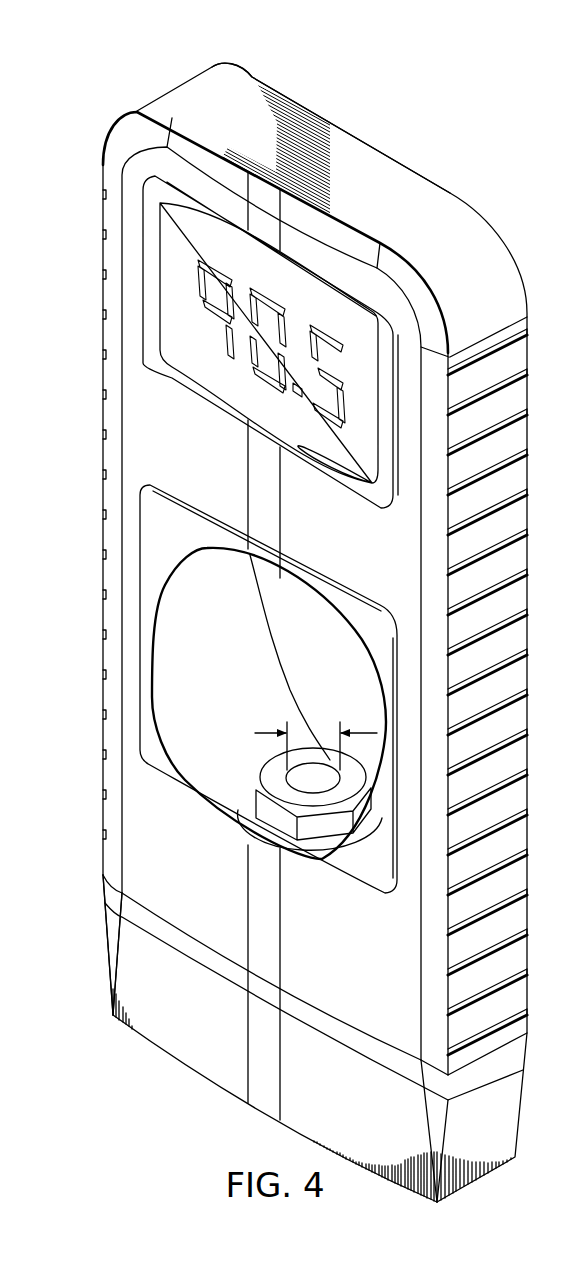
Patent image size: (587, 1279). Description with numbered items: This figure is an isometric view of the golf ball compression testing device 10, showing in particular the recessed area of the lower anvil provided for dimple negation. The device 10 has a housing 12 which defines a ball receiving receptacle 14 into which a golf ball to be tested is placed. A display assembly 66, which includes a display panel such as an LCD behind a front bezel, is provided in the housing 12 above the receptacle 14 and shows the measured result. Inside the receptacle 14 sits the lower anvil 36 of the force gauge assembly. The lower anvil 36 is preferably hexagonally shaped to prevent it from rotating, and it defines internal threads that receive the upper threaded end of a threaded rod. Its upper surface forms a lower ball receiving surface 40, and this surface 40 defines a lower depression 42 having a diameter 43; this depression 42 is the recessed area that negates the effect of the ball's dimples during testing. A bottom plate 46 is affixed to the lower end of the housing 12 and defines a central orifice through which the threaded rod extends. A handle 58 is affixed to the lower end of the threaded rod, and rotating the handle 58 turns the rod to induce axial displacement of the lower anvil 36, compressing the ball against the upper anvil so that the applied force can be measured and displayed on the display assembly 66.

The golf ball compression testing device 10 is at (117, 68).
The housing 12 is at (350, 144).
The ball receiving receptacle 14 is at (217, 578).
The lower anvil 36 is at (240, 807).
The lower ball receiving surface 40 is at (277, 776).
The lower depression 42 is at (313, 779).
The diameter 43 is at (266, 733).
The bottom plate 46 is at (112, 893).
The handle 58 is at (173, 1045).
The display assembly 66 is at (222, 385).